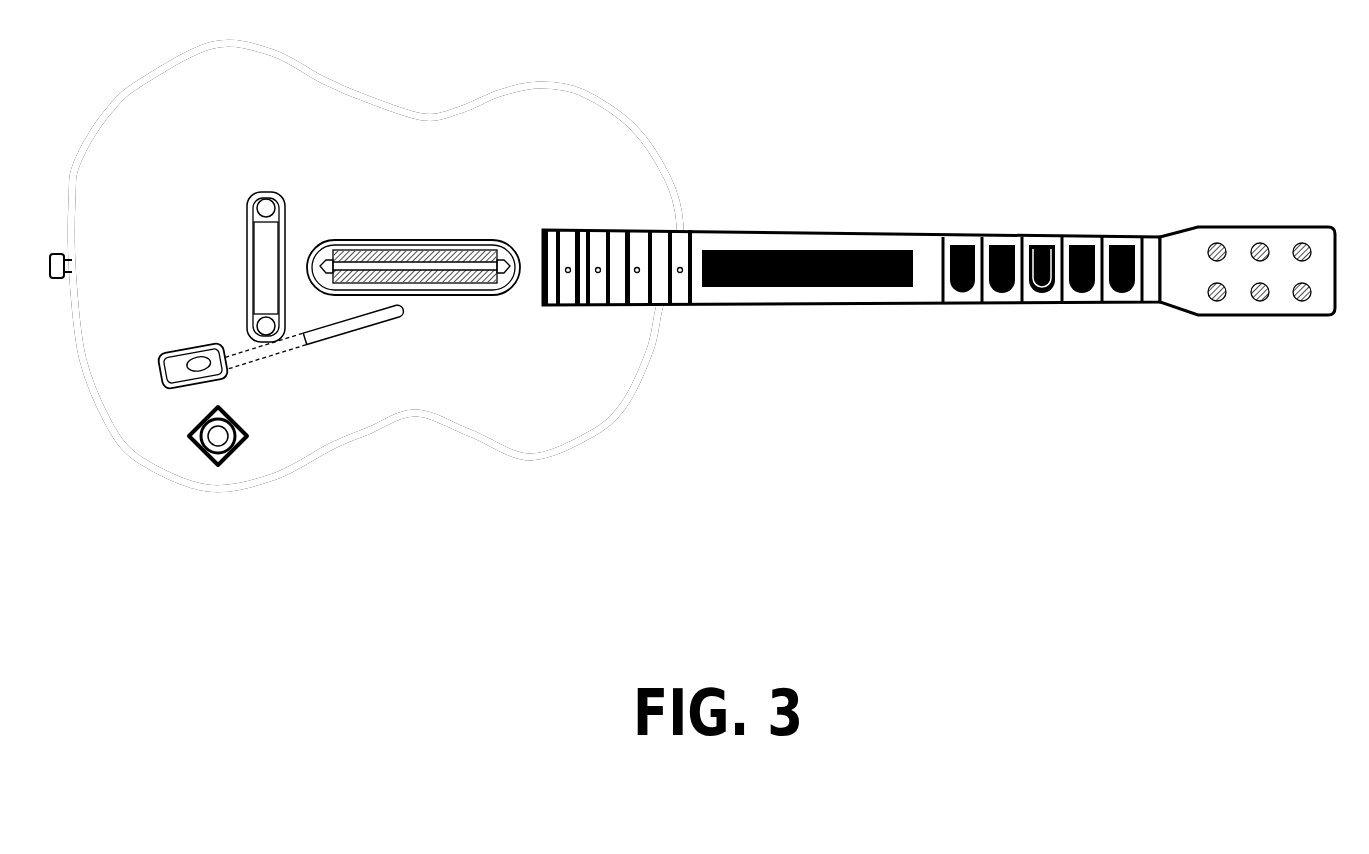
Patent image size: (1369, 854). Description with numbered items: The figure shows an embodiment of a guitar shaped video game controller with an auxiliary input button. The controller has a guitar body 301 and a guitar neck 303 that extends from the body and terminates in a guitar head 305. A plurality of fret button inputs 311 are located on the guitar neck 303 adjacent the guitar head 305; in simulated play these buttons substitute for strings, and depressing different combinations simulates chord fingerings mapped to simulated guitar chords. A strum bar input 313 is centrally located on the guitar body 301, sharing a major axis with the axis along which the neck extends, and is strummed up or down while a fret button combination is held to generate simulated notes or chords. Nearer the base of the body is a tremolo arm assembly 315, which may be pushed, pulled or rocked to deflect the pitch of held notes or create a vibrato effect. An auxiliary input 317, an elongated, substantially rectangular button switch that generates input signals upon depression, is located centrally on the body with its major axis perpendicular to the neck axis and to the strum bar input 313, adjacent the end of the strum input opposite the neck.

The guitar body 301 is at (303, 463).
The guitar neck 303 is at (767, 233).
The guitar head 305 is at (1253, 310).
The fret button inputs 311 is at (1108, 245).
The strum bar input 313 is at (400, 240).
The tremolo arm assembly 315 is at (333, 335).
The auxiliary input 317 is at (253, 267).